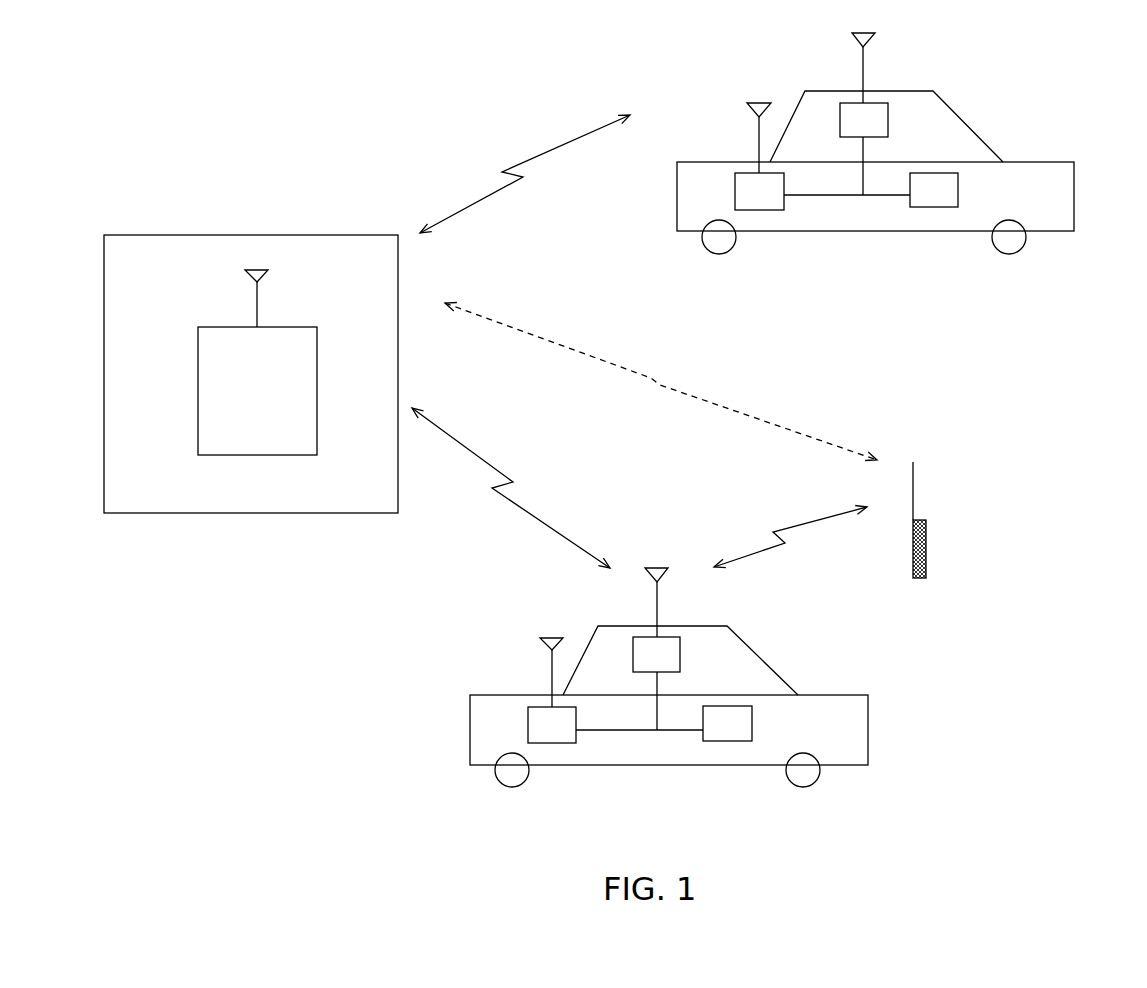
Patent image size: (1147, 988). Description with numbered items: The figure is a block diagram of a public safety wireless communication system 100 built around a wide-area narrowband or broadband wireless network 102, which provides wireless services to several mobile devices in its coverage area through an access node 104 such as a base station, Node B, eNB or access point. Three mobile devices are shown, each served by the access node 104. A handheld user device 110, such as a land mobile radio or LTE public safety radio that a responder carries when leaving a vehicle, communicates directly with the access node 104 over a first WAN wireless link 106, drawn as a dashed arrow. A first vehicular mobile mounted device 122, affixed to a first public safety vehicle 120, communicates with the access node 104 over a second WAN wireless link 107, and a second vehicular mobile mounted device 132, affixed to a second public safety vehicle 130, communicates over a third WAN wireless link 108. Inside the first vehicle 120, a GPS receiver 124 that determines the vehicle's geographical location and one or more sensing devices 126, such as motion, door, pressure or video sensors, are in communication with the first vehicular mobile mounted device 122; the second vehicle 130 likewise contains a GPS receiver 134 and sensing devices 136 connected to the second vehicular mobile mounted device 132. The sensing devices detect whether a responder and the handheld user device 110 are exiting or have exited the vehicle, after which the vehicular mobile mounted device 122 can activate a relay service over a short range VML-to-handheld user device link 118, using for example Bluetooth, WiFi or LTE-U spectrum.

The public safety wireless communication system 100 is at (539, 848).
The wide-area wireless network 102 is at (327, 234).
The access node 104 is at (317, 352).
The first WAN wireless link 106 is at (713, 407).
The second WAN wireless link 107 is at (492, 463).
The third WAN wireless link 108 is at (557, 152).
The handheld user device 110 is at (927, 542).
The VML-to-handheld user device link 118 is at (810, 523).
The public safety vehicle 120 is at (868, 718).
The first vehicular mobile mounted device 122 is at (682, 660).
The GPS receiver 124 is at (528, 730).
The sensing devices 126 is at (752, 730).
The public safety vehicle 130 is at (1074, 183).
The second vehicular mobile mounted device 132 is at (890, 127).
The GPS receiver 134 is at (735, 195).
The sensing devices 136 is at (958, 195).